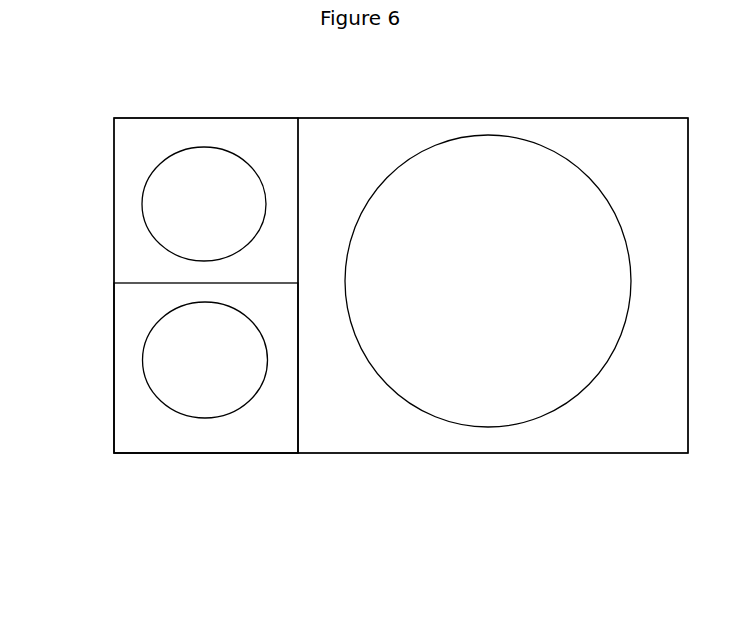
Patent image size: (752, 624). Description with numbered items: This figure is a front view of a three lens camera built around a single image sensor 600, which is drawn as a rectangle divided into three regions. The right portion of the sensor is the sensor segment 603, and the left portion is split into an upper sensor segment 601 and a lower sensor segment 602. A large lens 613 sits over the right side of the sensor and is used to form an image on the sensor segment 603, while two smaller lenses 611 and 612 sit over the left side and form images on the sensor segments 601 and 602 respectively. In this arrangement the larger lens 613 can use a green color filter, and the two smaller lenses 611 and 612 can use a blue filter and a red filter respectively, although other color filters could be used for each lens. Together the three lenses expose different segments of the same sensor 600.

The sensor 600 is at (382, 453).
The sensor segment 601 is at (133, 172).
The sensor segment 602 is at (132, 418).
The sensor segment 603 is at (595, 417).
The smaller lens 611 is at (207, 183).
The smaller lens 612 is at (168, 367).
The large lens 613 is at (542, 227).